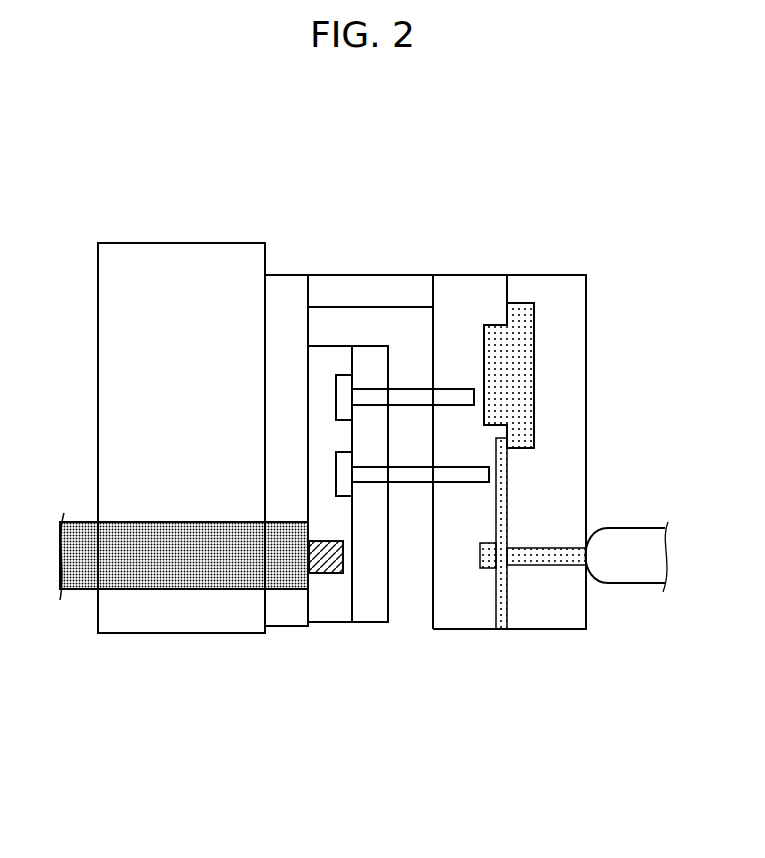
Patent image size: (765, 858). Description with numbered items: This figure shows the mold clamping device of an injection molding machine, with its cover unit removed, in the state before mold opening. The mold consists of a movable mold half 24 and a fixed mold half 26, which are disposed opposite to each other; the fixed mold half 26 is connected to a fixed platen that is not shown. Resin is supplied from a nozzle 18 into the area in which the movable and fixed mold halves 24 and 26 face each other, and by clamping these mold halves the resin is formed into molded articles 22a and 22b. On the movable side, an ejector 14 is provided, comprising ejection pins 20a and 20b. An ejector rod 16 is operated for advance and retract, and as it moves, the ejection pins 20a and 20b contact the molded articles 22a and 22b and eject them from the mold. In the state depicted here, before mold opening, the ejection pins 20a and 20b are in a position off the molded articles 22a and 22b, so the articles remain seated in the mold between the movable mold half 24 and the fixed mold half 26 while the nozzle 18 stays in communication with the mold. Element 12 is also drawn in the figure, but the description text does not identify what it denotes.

The first housing block 12 is at (197, 243).
The ejector 14 is at (345, 622).
The ejector rod 16 is at (165, 590).
The nozzle 18 is at (643, 583).
The ejection pin 20a is at (410, 389).
The ejection pin 20b is at (418, 482).
The molded article 22a is at (513, 378).
The molded article 22b is at (503, 480).
The movable mold half 24 is at (473, 275).
The fixed mold half 26 is at (586, 292).